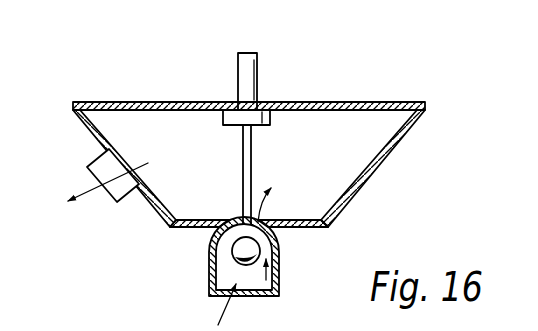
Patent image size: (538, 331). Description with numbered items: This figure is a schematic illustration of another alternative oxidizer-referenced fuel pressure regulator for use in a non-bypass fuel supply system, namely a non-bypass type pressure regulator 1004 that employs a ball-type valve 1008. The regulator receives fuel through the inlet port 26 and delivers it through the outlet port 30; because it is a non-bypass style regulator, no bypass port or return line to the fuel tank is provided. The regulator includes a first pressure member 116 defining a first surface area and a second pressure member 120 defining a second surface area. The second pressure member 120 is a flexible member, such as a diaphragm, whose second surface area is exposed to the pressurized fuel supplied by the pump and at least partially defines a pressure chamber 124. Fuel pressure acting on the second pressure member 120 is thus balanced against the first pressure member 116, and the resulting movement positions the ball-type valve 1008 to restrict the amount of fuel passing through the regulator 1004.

The non-bypass type pressure regulator 1004 is at (290, 142).
The second pressure member 120 is at (307, 102).
The pressure chamber 124 is at (347, 168).
The first pressure member 116 is at (257, 73).
The inlet port 26 is at (279, 258).
The ball-type valve 1008 is at (240, 258).
The outlet port 30 is at (95, 163).